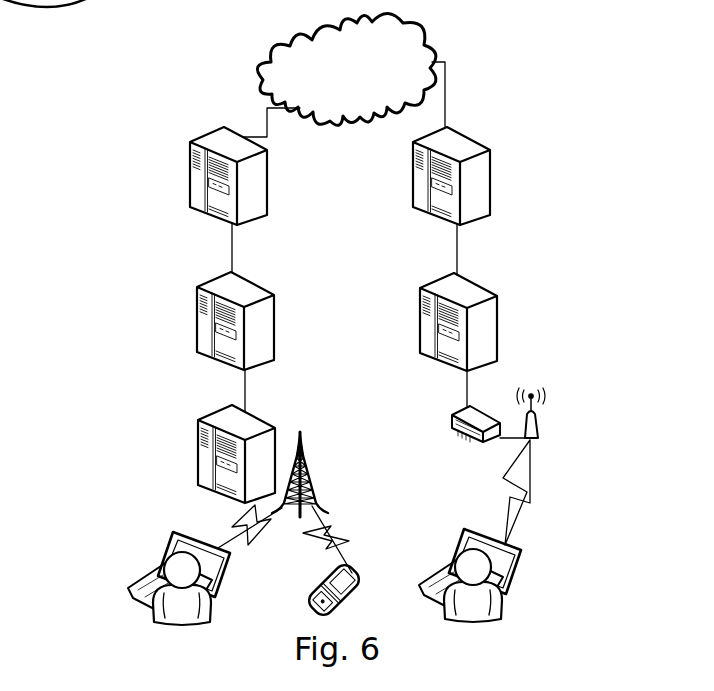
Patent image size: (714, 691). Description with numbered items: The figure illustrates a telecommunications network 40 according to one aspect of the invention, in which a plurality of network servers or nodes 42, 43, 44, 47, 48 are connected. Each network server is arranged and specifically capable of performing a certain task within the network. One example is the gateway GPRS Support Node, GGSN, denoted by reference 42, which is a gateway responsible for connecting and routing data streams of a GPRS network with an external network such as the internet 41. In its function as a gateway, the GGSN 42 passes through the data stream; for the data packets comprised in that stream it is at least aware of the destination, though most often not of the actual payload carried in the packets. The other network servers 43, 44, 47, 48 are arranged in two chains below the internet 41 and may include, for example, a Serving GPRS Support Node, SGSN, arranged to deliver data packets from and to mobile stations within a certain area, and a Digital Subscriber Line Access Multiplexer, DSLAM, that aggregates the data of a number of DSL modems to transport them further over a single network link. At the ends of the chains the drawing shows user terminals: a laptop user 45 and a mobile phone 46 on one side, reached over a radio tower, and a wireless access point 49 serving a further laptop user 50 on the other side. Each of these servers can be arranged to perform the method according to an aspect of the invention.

The telecommunications network 40 is at (130, 91).
The internet 41 is at (270, 70).
The gateway GPRS Support Node 42 is at (190, 183).
The network server 43 is at (197, 326).
The network server 44 is at (198, 457).
The user with laptop 45 is at (153, 580).
The mobile phone 46 is at (315, 598).
The network server 47 is at (494, 168).
The network server 48 is at (500, 320).
The wireless router 49 is at (538, 415).
The user with laptop 50 is at (517, 582).